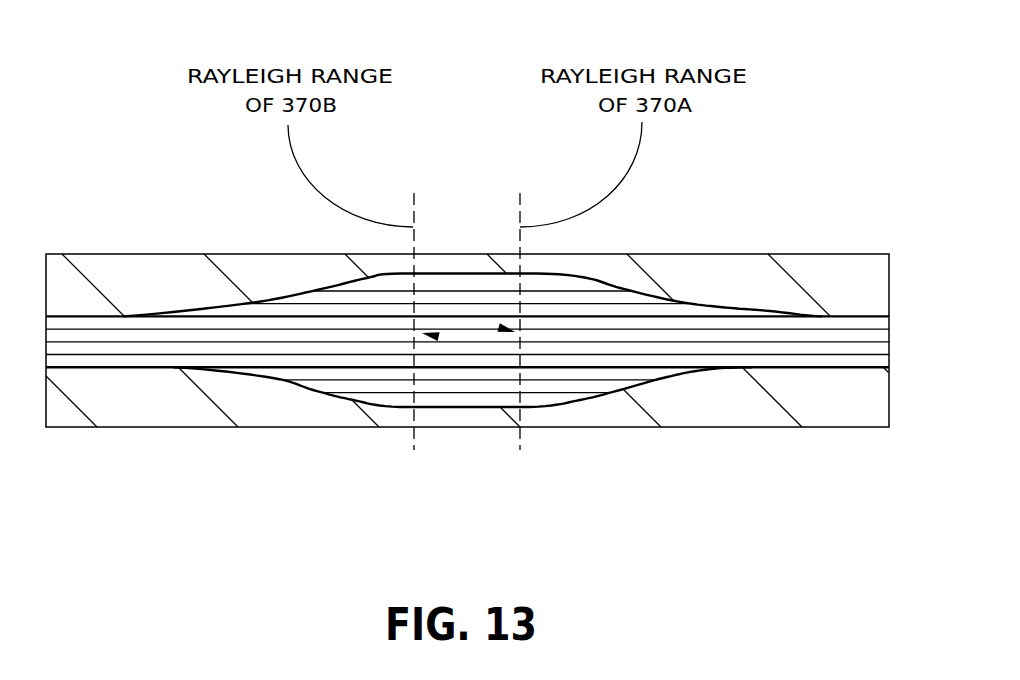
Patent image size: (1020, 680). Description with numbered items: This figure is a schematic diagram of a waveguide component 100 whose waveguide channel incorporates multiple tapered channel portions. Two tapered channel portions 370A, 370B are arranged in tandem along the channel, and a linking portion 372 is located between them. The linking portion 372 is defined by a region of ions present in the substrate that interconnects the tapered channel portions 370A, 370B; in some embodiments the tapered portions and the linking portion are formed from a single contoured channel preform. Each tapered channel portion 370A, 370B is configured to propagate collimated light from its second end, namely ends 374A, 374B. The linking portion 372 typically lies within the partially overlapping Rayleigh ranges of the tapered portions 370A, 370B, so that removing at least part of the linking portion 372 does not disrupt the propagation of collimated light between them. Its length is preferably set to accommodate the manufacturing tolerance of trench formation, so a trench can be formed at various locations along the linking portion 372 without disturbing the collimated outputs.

The waveguide component 100 is at (118, 80).
The tapered channel portion 370A is at (342, 312).
The tapered channel portion 370B is at (587, 312).
The linking portion 372 is at (498, 378).
The end 374A is at (438, 337).
The end 374B is at (499, 328).